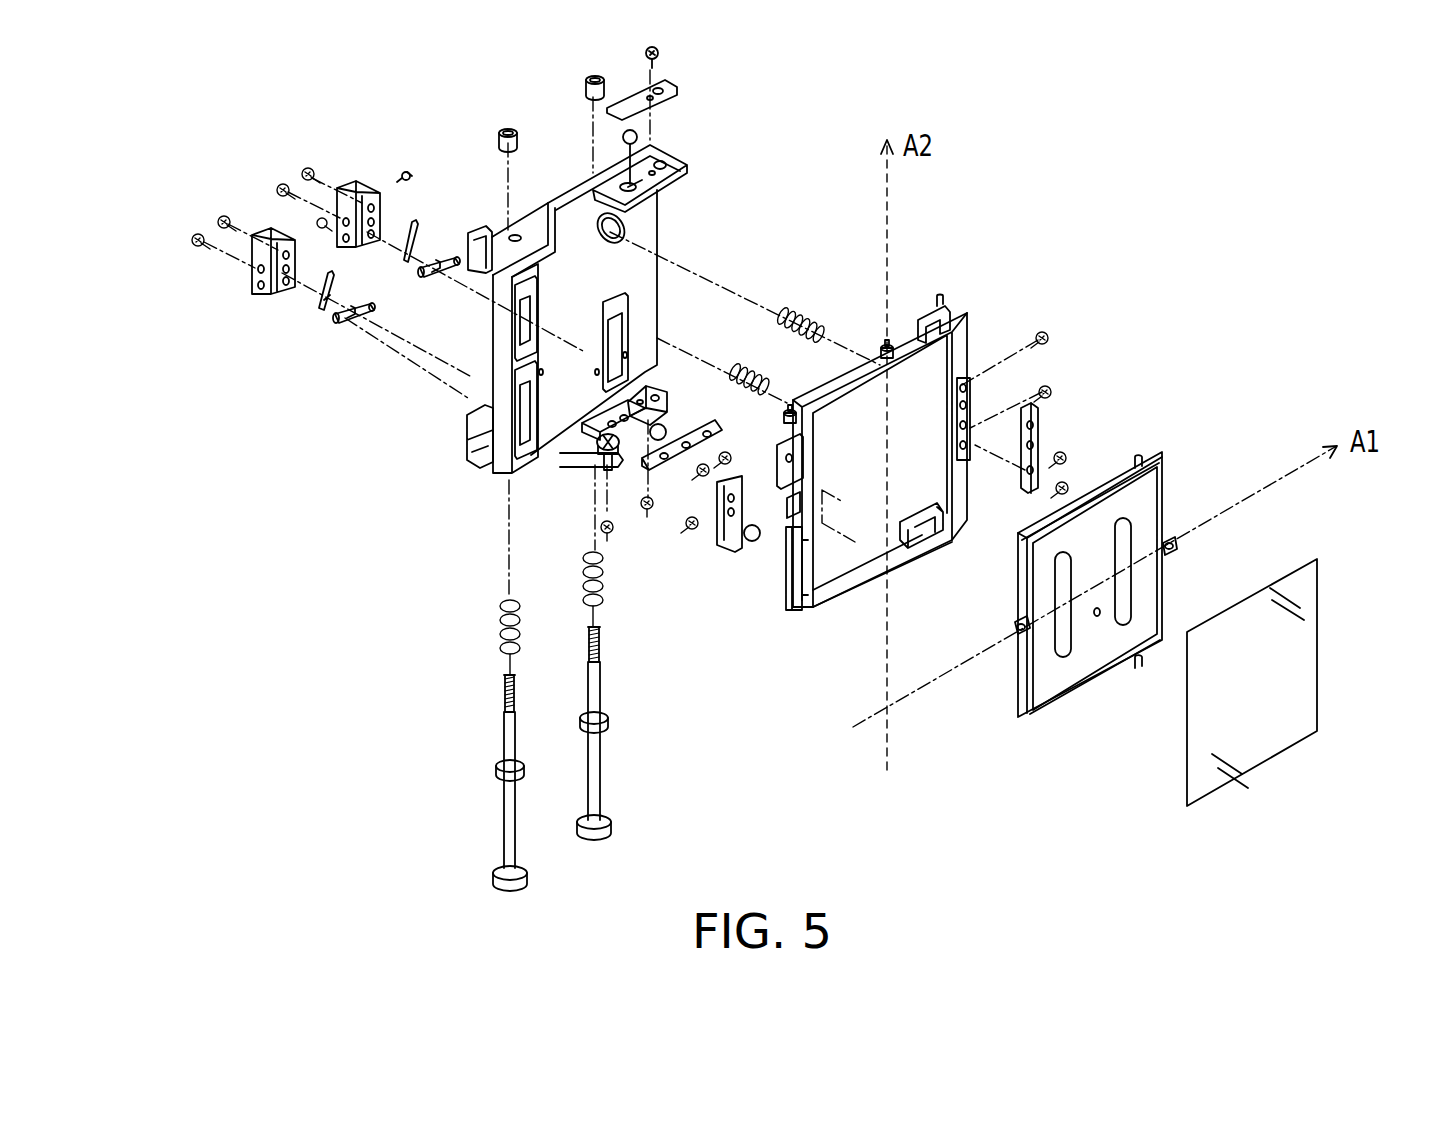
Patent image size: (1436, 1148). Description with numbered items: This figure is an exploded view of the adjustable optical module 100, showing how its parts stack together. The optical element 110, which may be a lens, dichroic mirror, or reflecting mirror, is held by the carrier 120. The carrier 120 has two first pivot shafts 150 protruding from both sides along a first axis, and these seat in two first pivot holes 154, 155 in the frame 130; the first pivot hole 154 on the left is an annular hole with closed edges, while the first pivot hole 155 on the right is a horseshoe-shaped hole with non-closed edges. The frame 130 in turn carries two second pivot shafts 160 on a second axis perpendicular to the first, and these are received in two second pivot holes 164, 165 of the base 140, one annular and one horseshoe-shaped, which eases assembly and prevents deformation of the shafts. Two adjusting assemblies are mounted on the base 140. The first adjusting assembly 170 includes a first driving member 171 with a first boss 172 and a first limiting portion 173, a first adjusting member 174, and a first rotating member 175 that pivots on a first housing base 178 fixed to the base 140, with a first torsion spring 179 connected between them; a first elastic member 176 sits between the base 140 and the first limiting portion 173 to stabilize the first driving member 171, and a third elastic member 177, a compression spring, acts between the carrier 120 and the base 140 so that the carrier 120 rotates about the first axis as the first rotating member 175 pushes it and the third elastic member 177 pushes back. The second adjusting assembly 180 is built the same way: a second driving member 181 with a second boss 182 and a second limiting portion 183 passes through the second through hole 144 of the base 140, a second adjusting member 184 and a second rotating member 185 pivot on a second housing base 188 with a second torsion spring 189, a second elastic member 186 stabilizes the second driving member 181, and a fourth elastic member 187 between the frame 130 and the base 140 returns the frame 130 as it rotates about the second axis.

The adjustable optical module 100 is at (1256, 160).
The optical element 110 is at (1303, 688).
The carrier 120 is at (1165, 495).
The frame 130 is at (960, 320).
The base 140 is at (650, 238).
The second through hole 144 is at (515, 235).
The first pivot shaft 150 is at (1175, 547).
The first pivot hole 154 is at (790, 508).
The first pivot hole 155 is at (998, 405).
The second pivot shaft 160 is at (885, 337).
The second pivot hole 164 is at (640, 178).
The second pivot hole 165 is at (634, 392).
The first adjusting assembly 170 is at (682, 656).
The first driving member 171 is at (594, 762).
The first boss 172 is at (608, 818).
The first limiting portion 173 is at (606, 724).
The first adjusting member 174 is at (592, 78).
The first rotating member 175 is at (440, 266).
The first elastic member 176 is at (605, 606).
The third elastic member 177 is at (798, 324).
The first housing base 178 is at (350, 185).
The first torsion spring 179 is at (408, 256).
The second adjusting assembly 180 is at (418, 704).
The second driving member 181 is at (506, 809).
The second boss 182 is at (500, 869).
The second limiting portion 183 is at (498, 768).
The second adjusting member 184 is at (505, 128).
The second rotating member 185 is at (349, 326).
The second elastic member 186 is at (500, 647).
The fourth elastic member 187 is at (747, 370).
The second housing base 188 is at (262, 250).
The second torsion spring 189 is at (323, 297).